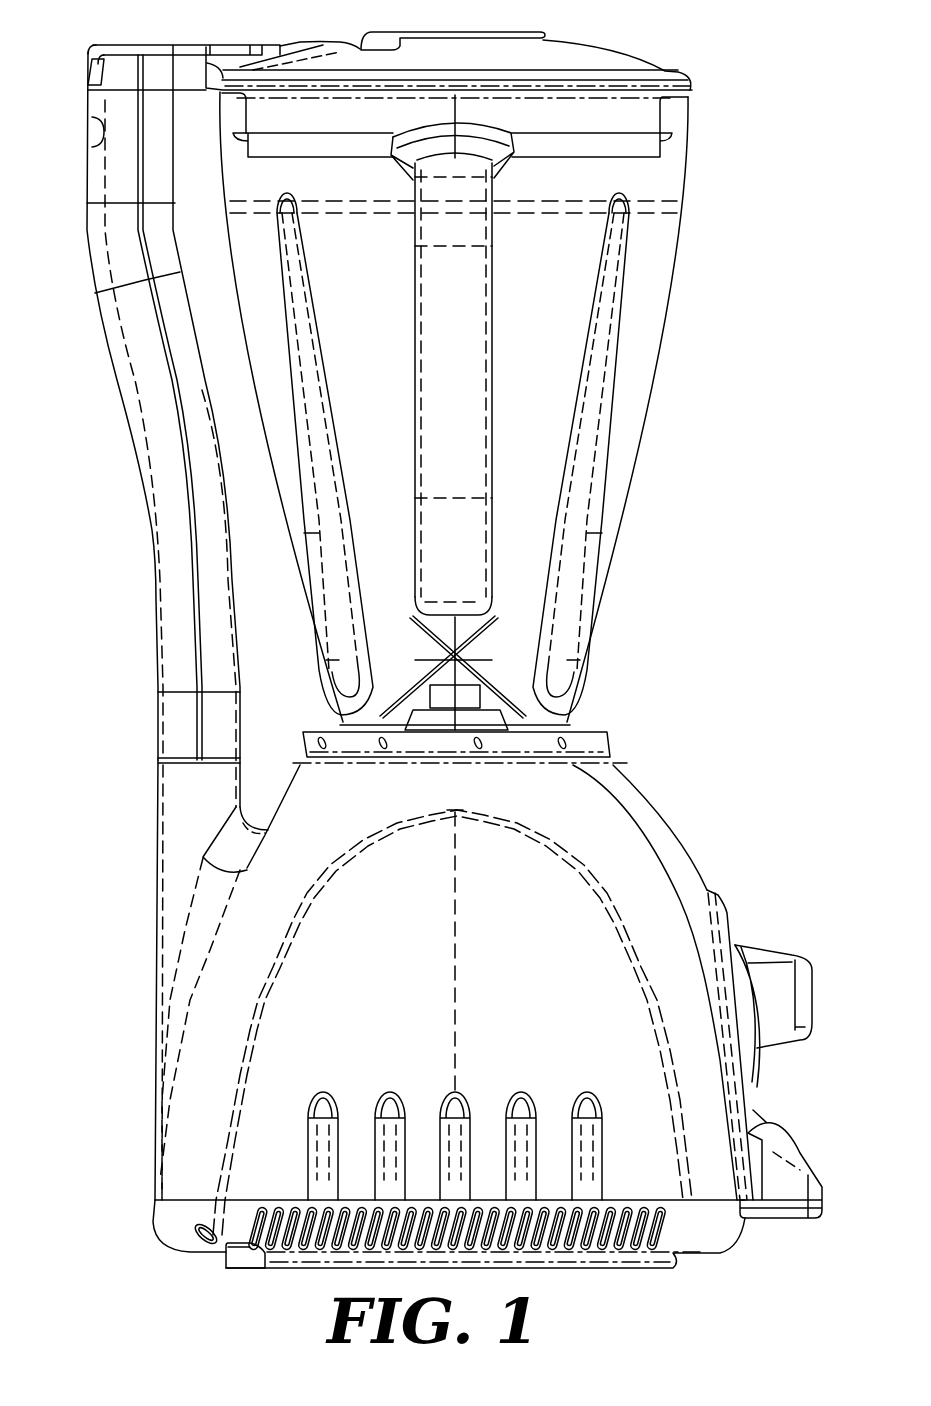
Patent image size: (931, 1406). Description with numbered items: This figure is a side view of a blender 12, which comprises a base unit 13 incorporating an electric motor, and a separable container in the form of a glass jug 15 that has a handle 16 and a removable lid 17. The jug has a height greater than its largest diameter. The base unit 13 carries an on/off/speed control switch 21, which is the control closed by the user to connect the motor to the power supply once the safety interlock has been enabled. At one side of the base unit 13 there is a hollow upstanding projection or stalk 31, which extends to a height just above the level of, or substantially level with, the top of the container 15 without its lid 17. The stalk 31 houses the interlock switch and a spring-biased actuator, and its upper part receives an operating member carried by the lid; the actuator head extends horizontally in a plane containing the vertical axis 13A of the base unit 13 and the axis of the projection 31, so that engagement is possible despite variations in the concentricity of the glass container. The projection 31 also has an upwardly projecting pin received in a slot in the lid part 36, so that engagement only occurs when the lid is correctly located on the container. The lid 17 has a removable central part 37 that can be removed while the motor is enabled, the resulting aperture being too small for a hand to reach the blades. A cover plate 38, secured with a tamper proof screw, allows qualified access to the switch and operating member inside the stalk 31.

The blender 12 is at (722, 612).
The base unit 13 is at (215, 1030).
The vertical axis of the base unit 13A is at (453, 973).
The glass jug 15 is at (636, 350).
The handle 16 is at (463, 458).
The removable lid 17 is at (602, 60).
The on/off/speed control switch 21 is at (778, 993).
The hollow upstanding projection or stalk 31 is at (180, 647).
The lid part 36 is at (187, 50).
The removable central part 37 is at (388, 34).
The cover plate 38 is at (100, 257).